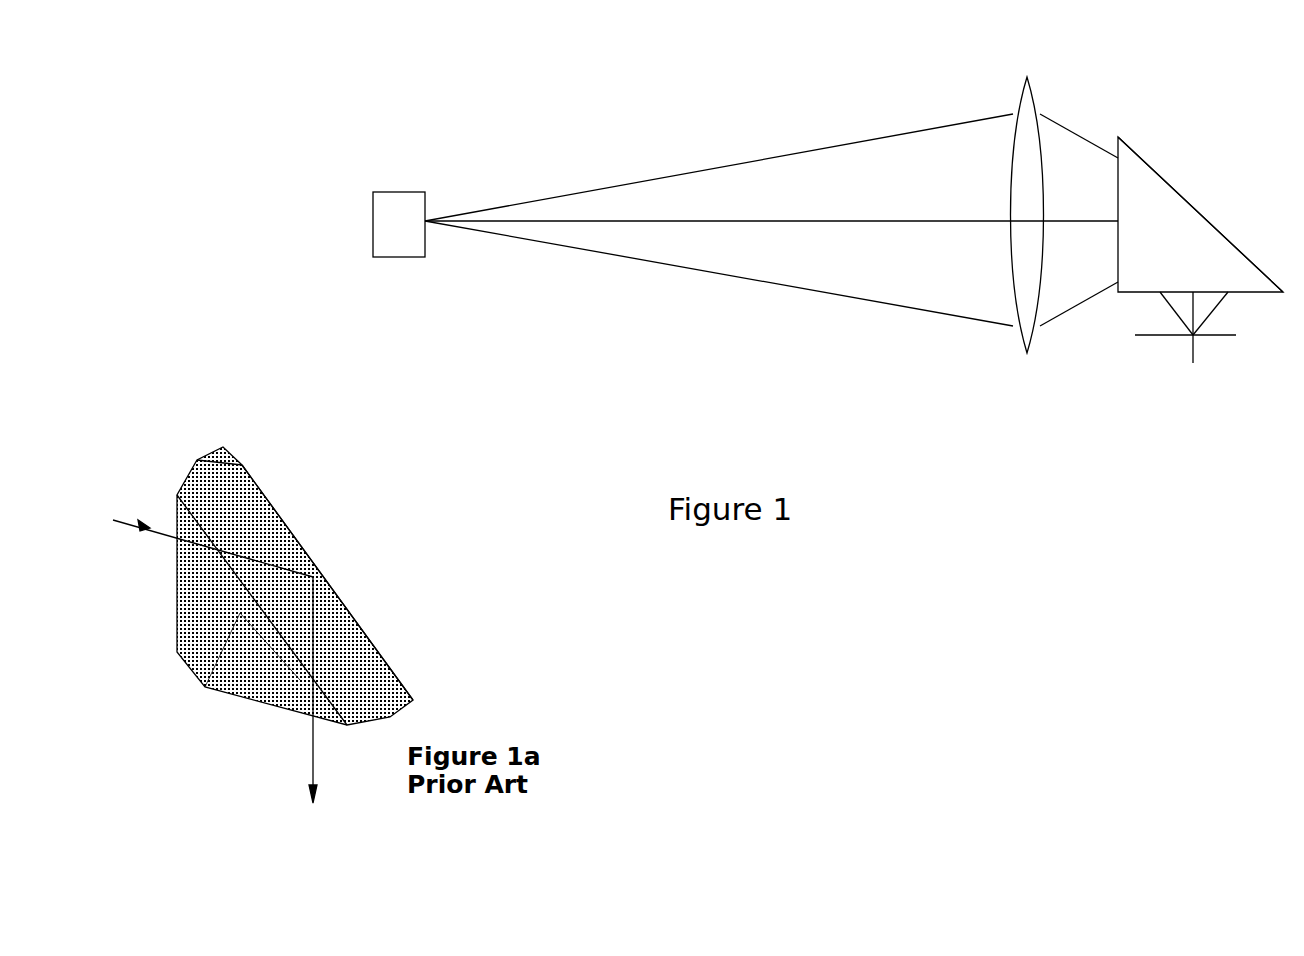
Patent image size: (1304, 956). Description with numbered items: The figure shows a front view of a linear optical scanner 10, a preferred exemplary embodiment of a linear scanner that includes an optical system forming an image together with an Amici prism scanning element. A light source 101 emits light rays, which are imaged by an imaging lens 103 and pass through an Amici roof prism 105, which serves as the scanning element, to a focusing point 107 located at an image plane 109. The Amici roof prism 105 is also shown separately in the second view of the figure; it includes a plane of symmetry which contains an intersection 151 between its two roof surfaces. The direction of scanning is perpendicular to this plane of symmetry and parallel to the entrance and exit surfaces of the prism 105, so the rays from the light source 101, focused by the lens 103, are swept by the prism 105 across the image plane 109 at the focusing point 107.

In FIG. 1, the linear optical scanner 10 is at (1095, 483).
In FIG. 1, the light source 101 is at (373, 210).
In FIG. 1, the imaging lens 103 is at (1030, 104).
In FIG. 1, the Amici roof prism 105 is at (1148, 220).
In FIG. 1A, the Amici roof prism 105 is at (167, 678).
In FIG. 1, the intersection 151 is at (1147, 158).
In FIG. 1A, the intersection 151 is at (247, 488).
In FIG. 1, the focusing point 107 is at (1197, 342).
In FIG. 1, the image plane 109 is at (1136, 335).